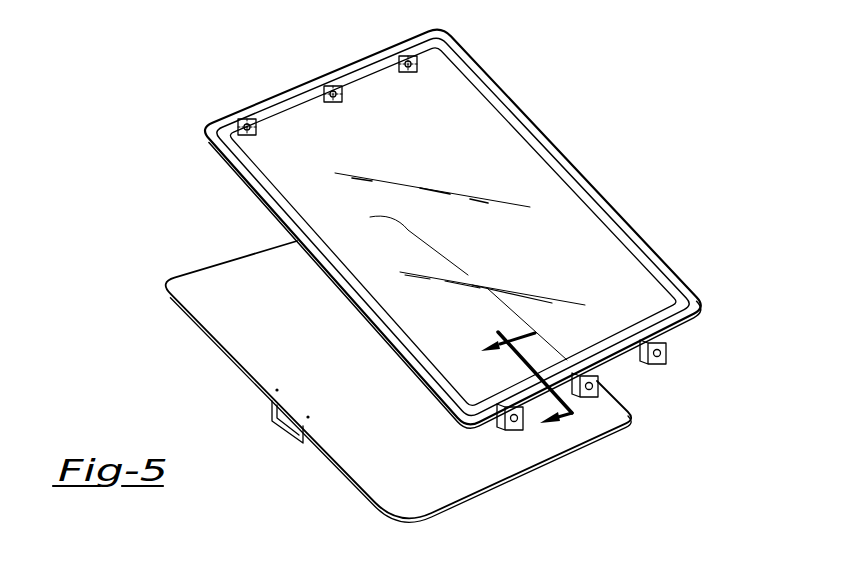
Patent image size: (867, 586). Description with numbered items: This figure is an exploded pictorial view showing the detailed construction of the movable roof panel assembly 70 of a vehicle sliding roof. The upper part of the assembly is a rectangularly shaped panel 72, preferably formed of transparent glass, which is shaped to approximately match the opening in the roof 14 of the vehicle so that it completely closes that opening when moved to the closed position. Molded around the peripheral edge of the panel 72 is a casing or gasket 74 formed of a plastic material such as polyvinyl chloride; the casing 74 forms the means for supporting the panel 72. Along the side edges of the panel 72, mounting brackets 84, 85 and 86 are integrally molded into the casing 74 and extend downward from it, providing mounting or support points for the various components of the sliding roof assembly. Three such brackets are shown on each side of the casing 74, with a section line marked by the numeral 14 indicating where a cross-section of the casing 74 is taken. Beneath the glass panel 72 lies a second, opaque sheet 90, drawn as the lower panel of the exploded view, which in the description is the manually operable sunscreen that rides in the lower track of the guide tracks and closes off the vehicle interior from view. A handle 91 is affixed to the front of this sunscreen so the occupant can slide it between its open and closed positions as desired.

The roof 14 is at (507, 399).
The movable roof panel assembly 70 is at (453, 229).
The panel 72 is at (490, 113).
The casing 74 is at (266, 93).
The mounting bracket 84 is at (222, 117).
The mounting bracket 85 is at (328, 78).
The mounting bracket 86 is at (408, 50).
The base panel 90 is at (200, 295).
The handle 91 is at (289, 432).